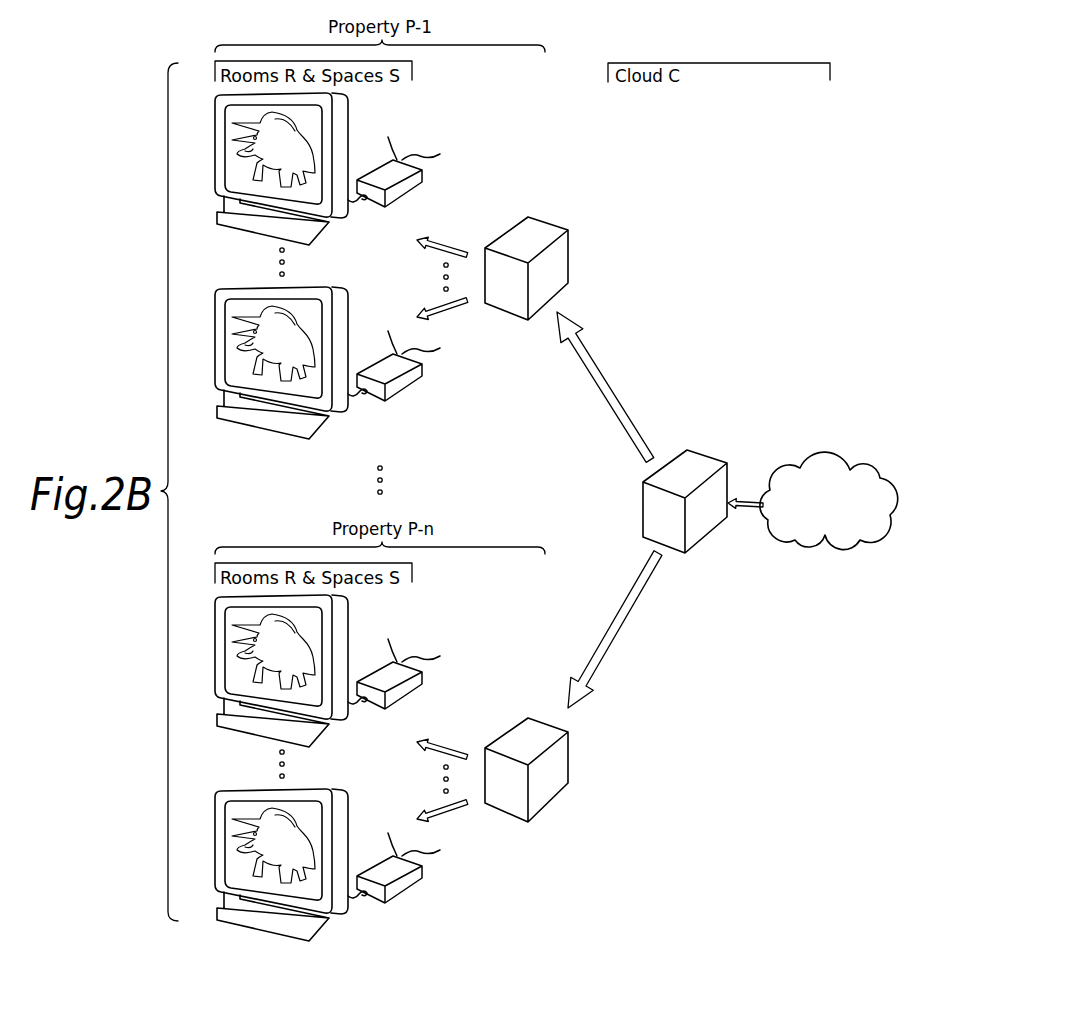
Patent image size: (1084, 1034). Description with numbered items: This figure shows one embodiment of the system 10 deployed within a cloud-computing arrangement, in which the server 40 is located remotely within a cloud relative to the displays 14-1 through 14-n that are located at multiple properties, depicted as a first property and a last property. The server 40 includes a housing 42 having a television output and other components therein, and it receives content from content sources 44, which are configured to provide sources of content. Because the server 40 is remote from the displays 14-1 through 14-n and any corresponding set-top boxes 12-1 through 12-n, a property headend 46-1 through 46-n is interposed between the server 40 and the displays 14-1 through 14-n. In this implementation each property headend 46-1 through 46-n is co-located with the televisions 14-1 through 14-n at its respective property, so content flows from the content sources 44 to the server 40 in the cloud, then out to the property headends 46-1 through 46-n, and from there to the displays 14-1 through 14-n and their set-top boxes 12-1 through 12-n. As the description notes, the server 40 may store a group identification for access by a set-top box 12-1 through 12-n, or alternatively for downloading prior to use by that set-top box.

The system 10 is at (158, 106).
The display 14-1 is at (349, 106).
The display 14-n is at (349, 300).
The set-top box 12-1 is at (408, 197).
The set-top box 12-n is at (408, 391).
The property headend 46-1 is at (548, 218).
The property headend 46-n is at (548, 718).
The server 40 is at (707, 450).
The housing 42 is at (700, 528).
The content sources 44 is at (835, 457).